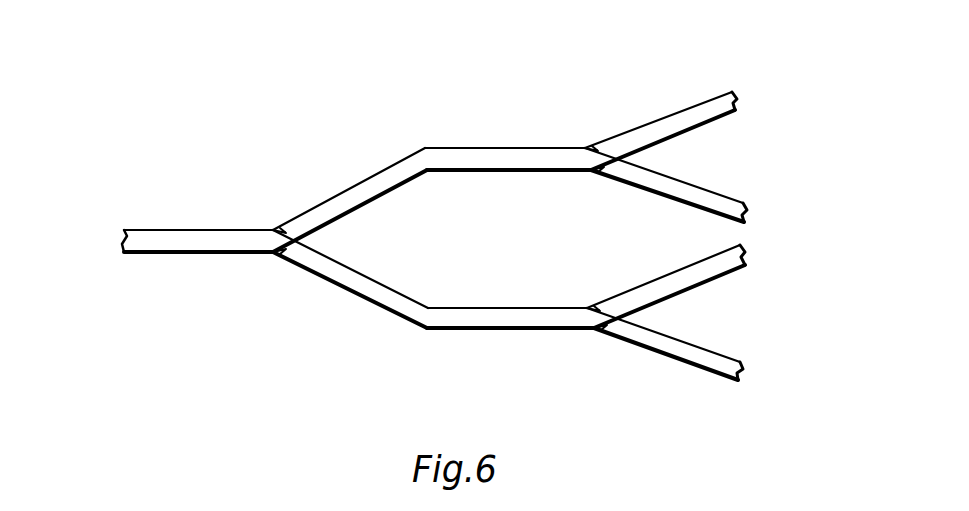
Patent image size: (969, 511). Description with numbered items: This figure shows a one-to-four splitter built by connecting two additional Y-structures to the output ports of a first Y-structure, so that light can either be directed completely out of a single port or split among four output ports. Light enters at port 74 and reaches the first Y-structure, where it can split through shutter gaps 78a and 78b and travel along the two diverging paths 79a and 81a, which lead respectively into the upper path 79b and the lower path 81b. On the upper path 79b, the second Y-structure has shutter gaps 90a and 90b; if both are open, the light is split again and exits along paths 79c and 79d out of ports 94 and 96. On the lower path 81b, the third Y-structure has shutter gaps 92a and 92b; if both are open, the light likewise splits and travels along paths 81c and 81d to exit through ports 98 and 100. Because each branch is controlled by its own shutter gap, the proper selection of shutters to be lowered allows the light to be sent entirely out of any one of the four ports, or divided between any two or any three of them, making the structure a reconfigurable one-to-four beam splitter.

The port 74 is at (113, 230).
The shutter gap 78a is at (303, 212).
The shutter gap 78b is at (292, 258).
The path 79a is at (384, 167).
The path 79b is at (503, 148).
The path 79c is at (684, 108).
The path 79d is at (702, 192).
The path 81a is at (362, 315).
The path 81b is at (507, 330).
The path 81c is at (688, 290).
The path 81d is at (687, 361).
The shutter gap 90a is at (604, 148).
The shutter gap 90b is at (597, 169).
The shutter gap 92a is at (606, 307).
The shutter gap 92b is at (603, 330).
The port 94 is at (742, 98).
The port 96 is at (748, 208).
The port 98 is at (752, 252).
The port 100 is at (745, 376).